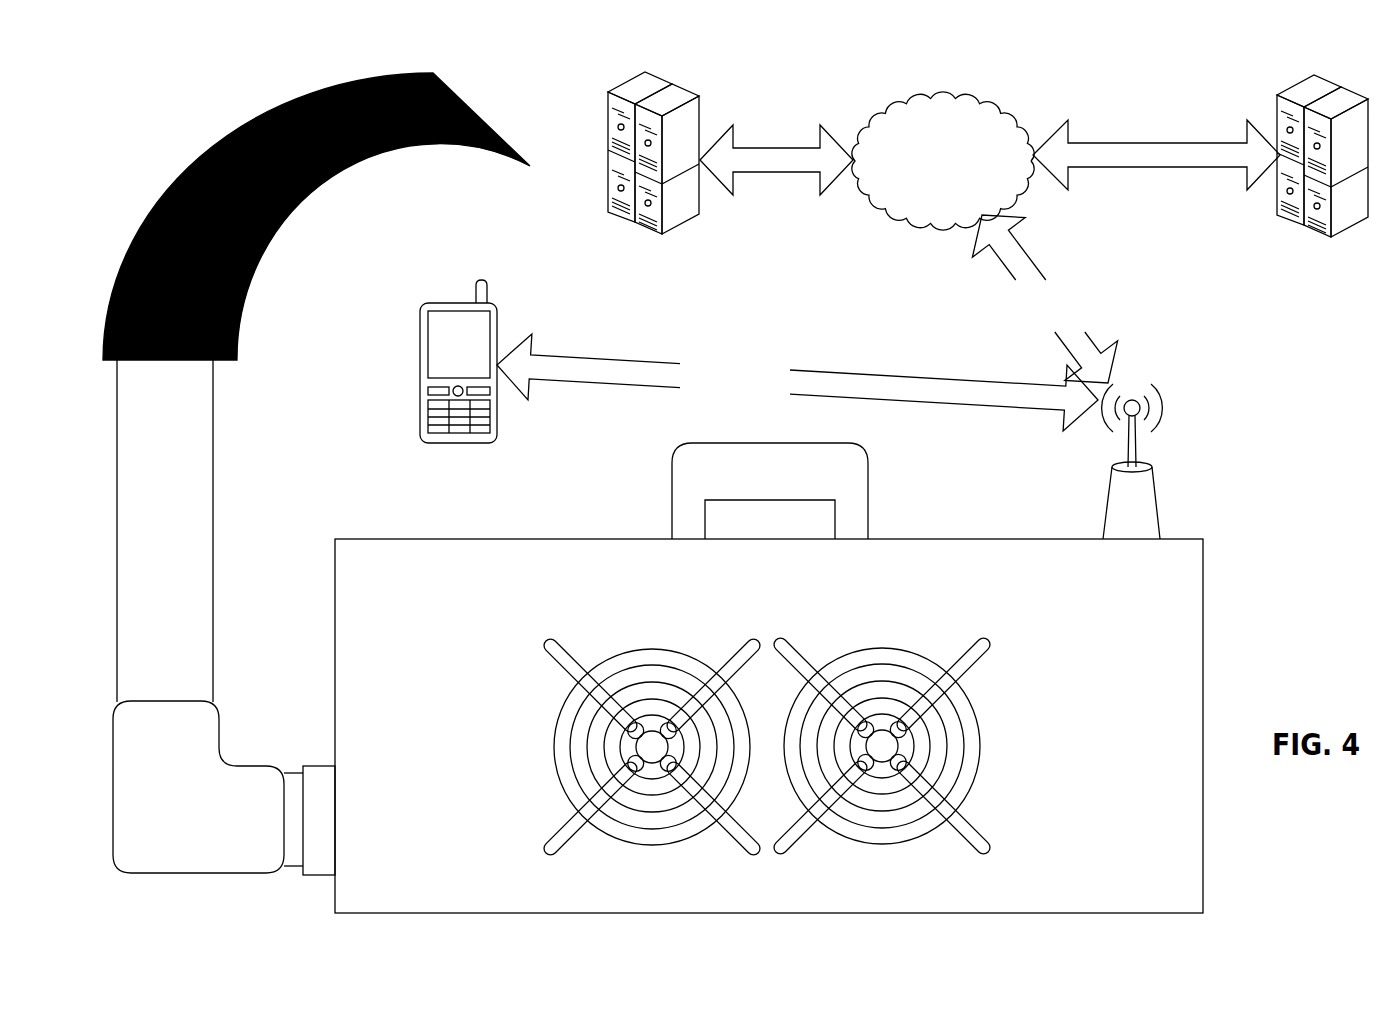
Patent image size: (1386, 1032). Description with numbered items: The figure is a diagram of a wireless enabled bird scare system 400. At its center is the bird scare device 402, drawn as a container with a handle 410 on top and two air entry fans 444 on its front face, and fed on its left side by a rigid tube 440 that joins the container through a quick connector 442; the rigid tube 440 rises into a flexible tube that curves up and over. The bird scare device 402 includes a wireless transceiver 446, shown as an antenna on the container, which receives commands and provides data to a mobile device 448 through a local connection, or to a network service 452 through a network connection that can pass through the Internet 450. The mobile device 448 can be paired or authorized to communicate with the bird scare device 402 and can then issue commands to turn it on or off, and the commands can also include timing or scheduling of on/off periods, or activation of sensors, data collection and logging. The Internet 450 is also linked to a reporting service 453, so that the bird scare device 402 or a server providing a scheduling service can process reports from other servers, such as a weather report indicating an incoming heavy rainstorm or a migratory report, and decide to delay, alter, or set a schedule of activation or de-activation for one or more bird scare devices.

The wireless enabled bird scare system 400 is at (739, 492).
The bird scare device 402 is at (1203, 675).
The handle 410 is at (867, 453).
The rigid tube 440 is at (213, 444).
The quick connector 442 is at (224, 788).
The air entry fan 444 is at (980, 737).
The wireless transceiver 446 is at (1147, 492).
The mobile device 448 is at (490, 443).
The Internet 450 is at (1010, 198).
The network service 452 is at (1280, 217).
The reporting service 453 is at (608, 215).